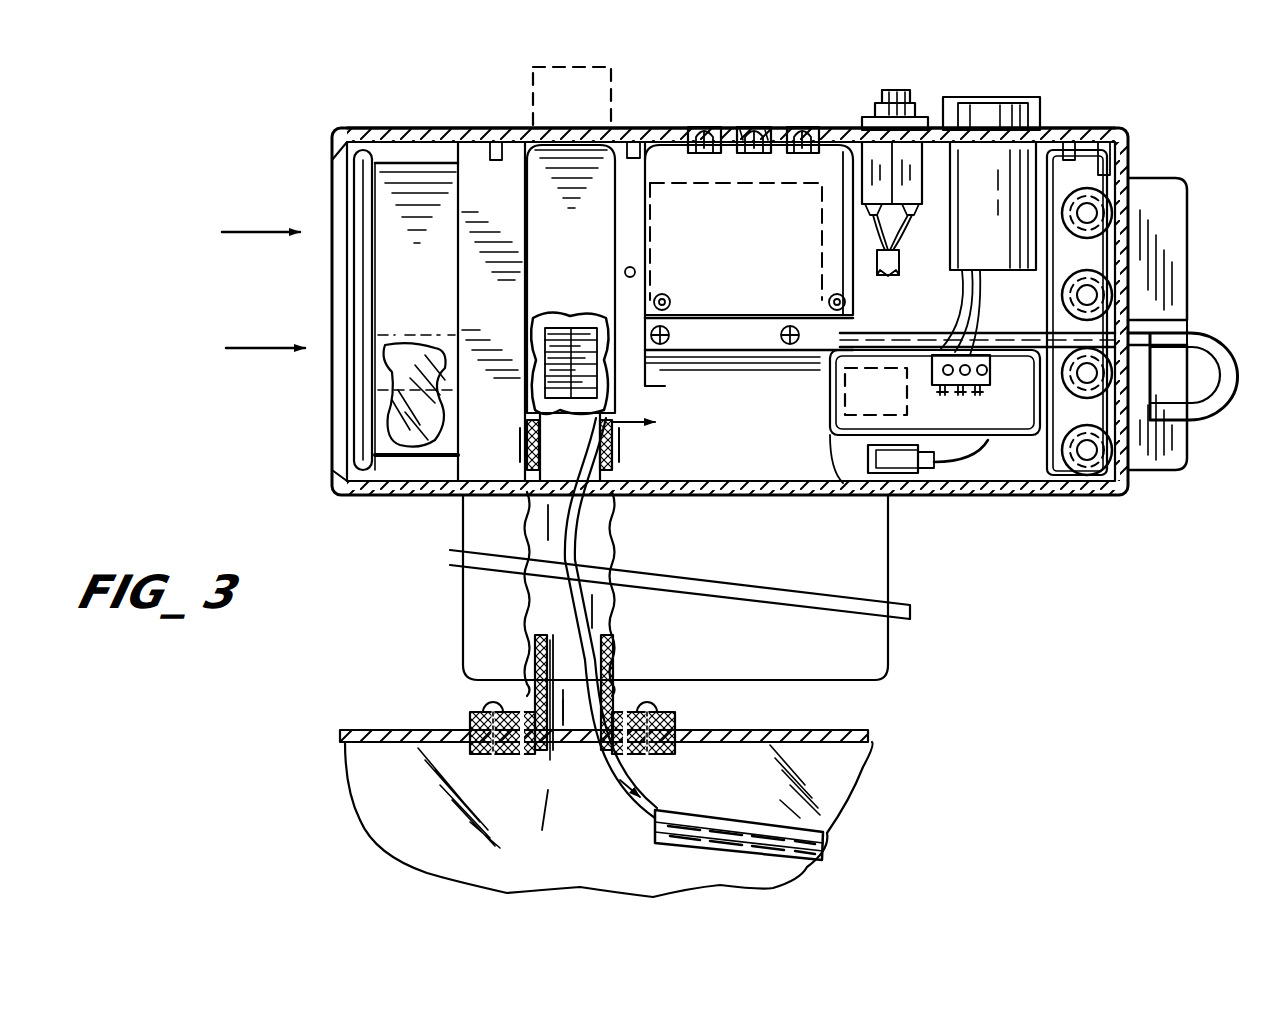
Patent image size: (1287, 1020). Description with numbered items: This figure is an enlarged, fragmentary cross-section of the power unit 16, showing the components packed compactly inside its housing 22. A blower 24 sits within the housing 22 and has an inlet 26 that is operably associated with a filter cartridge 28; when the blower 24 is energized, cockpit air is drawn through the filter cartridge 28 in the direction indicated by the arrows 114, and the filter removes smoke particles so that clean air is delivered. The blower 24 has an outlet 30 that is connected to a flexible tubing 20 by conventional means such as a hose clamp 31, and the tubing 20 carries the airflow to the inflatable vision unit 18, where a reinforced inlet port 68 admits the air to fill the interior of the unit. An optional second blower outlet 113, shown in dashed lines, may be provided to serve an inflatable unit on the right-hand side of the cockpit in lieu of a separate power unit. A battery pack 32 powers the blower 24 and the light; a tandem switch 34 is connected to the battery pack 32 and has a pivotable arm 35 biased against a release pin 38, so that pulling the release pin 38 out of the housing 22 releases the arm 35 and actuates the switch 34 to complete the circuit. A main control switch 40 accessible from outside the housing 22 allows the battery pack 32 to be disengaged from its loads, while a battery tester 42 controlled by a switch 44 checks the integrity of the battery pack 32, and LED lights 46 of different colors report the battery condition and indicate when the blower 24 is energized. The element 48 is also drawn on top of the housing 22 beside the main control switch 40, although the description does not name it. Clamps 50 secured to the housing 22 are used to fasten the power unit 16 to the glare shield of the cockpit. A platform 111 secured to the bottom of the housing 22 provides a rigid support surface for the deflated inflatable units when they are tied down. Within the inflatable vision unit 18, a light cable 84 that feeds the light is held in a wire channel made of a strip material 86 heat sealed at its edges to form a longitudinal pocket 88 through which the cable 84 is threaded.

The second blower outlet 113 is at (565, 67).
The filter cartridge 28 is at (405, 185).
The inlet 26 is at (472, 160).
The power unit 16 is at (637, 128).
The LED lights 46 is at (705, 135).
The battery tester 42 is at (724, 160).
The switch 44 is at (890, 100).
The electrical connector 48 is at (978, 120).
The main control switch 40 is at (1008, 120).
The arrows 114 is at (246, 232).
The clamps 50 is at (1192, 246).
The blower 24 is at (705, 160).
The pivotable arm 35 is at (937, 348).
The release pin 38 is at (1232, 383).
The tandem switch 34 is at (996, 385).
The hose clamp 31 is at (632, 440).
The outlet 30 is at (605, 495).
The housing 22 is at (784, 493).
The battery pack 32 is at (843, 492).
The flexible tubing 20 is at (620, 620).
The platform 111 is at (465, 657).
The inflatable vision unit 18 is at (791, 730).
The reinforced inlet port 68 is at (526, 757).
The light cable 84 is at (622, 812).
The strip material 86 is at (695, 813).
The longitudinal pocket 88 is at (742, 835).